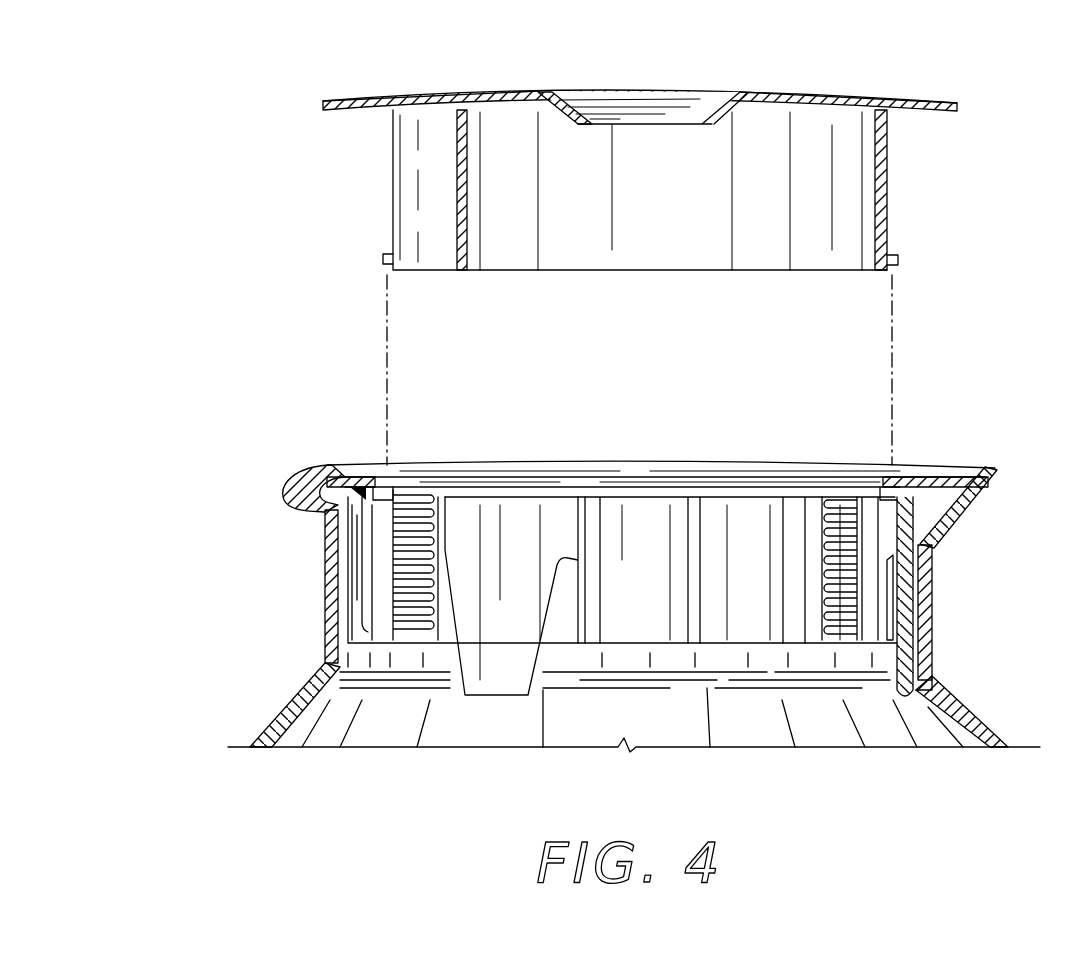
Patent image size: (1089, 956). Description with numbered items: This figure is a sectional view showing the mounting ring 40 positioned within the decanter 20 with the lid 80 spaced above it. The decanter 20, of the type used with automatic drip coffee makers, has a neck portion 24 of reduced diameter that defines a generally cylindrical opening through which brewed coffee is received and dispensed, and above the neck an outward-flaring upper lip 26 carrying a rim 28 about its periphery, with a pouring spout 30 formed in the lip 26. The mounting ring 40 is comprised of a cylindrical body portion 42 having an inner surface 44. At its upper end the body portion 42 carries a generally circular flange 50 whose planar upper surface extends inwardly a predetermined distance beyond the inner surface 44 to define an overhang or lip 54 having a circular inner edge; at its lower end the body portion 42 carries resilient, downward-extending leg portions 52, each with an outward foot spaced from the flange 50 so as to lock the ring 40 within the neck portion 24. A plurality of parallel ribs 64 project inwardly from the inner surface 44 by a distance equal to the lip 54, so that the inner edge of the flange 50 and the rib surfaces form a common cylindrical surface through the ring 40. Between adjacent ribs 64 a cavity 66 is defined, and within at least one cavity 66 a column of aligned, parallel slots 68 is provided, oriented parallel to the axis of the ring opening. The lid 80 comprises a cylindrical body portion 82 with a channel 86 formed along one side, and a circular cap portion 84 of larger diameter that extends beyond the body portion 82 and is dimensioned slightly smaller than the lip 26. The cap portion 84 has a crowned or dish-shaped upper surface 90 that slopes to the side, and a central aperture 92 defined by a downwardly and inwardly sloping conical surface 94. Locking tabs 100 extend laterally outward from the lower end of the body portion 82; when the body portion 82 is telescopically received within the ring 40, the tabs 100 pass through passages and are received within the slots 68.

The decanter 20 is at (621, 587).
The neck portion 24 is at (934, 610).
The upper lip 26 is at (960, 518).
The rim 28 is at (996, 470).
The pouring spout 30 is at (318, 482).
The mounting ring 40 is at (922, 578).
The cylindrical body portion 42 is at (935, 668).
The inner surface 44 is at (640, 615).
The flange 50 is at (940, 470).
The leg portion 52 is at (485, 680).
The lip 54 is at (381, 487).
The rib 64 is at (378, 650).
The cavity 66 is at (560, 520).
The slot 68 is at (414, 540).
The lid 80 is at (680, 239).
The body portion 82 is at (889, 172).
The cap portion 84 is at (960, 108).
The channel 86 is at (440, 215).
The upper surface 90 is at (798, 92).
The aperture 92 is at (642, 106).
The conical surface 94 is at (583, 91).
The locking tab 100 is at (382, 259).